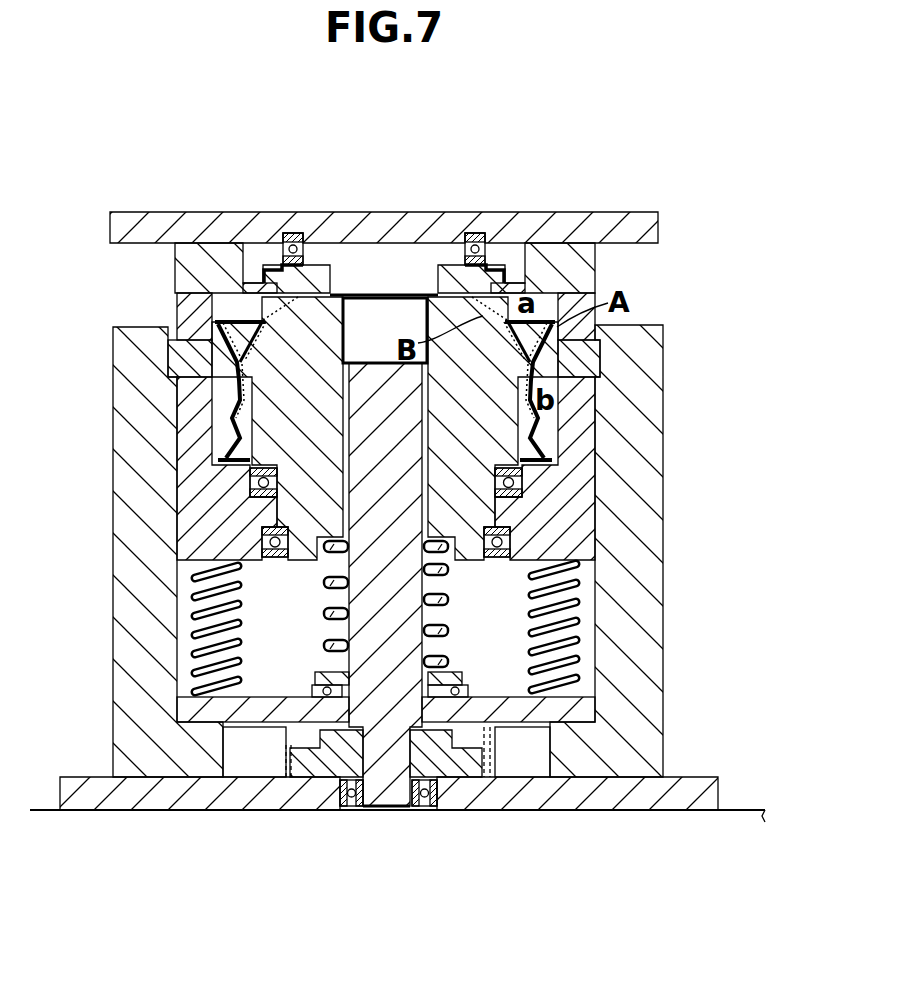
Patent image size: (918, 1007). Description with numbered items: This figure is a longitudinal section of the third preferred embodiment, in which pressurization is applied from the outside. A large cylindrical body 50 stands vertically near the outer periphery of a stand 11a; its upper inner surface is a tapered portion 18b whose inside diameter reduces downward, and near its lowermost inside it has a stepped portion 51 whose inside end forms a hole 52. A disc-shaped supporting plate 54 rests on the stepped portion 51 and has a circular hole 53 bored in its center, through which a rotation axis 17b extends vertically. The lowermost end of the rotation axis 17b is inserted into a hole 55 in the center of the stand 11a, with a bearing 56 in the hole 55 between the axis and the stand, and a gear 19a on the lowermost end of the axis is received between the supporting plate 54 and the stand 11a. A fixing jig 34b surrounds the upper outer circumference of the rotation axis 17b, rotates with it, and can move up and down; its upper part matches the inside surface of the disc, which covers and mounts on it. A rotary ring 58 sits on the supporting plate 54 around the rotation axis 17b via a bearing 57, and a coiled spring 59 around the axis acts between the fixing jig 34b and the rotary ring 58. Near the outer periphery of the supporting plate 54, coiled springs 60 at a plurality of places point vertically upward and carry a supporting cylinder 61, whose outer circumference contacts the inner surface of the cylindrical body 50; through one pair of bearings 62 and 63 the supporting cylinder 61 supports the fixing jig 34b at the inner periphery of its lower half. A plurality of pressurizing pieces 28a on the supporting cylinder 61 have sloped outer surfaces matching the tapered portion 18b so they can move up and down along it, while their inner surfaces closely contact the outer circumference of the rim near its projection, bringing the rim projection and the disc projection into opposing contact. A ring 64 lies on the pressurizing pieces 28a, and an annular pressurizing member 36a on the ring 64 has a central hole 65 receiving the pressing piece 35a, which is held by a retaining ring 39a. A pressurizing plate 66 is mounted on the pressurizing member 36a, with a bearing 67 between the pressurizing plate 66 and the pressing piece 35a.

The stand 11a is at (703, 777).
The rotation axis 17b is at (378, 806).
The tapered portion 18b is at (600, 395).
The gear 19a is at (480, 783).
The pressurizing pieces 28a is at (600, 347).
The fixing jig 34b is at (472, 548).
The pressing piece 35a is at (312, 255).
The pressurizing member 36a is at (175, 273).
The retaining ring 39a is at (243, 284).
The cylindrical body 50 is at (663, 700).
The stepped portion 51 is at (600, 704).
The hole 52 is at (538, 772).
The circular hole 53 is at (472, 728).
The supporting plate 54 is at (386, 752).
The hole 55 is at (423, 808).
The bearing 56 is at (440, 793).
The bearing 57 is at (485, 674).
The rotary ring 58 is at (453, 670).
The coiled spring 59 is at (325, 646).
The coiled springs 60 is at (240, 630).
The supporting cylinder 61 is at (600, 452).
The bearing 62 is at (266, 560).
The bearing 63 is at (523, 482).
The ring 64 is at (177, 308).
The hole 65 is at (283, 256).
The pressurizing plate 66 is at (404, 212).
The bearing 67 is at (292, 233).